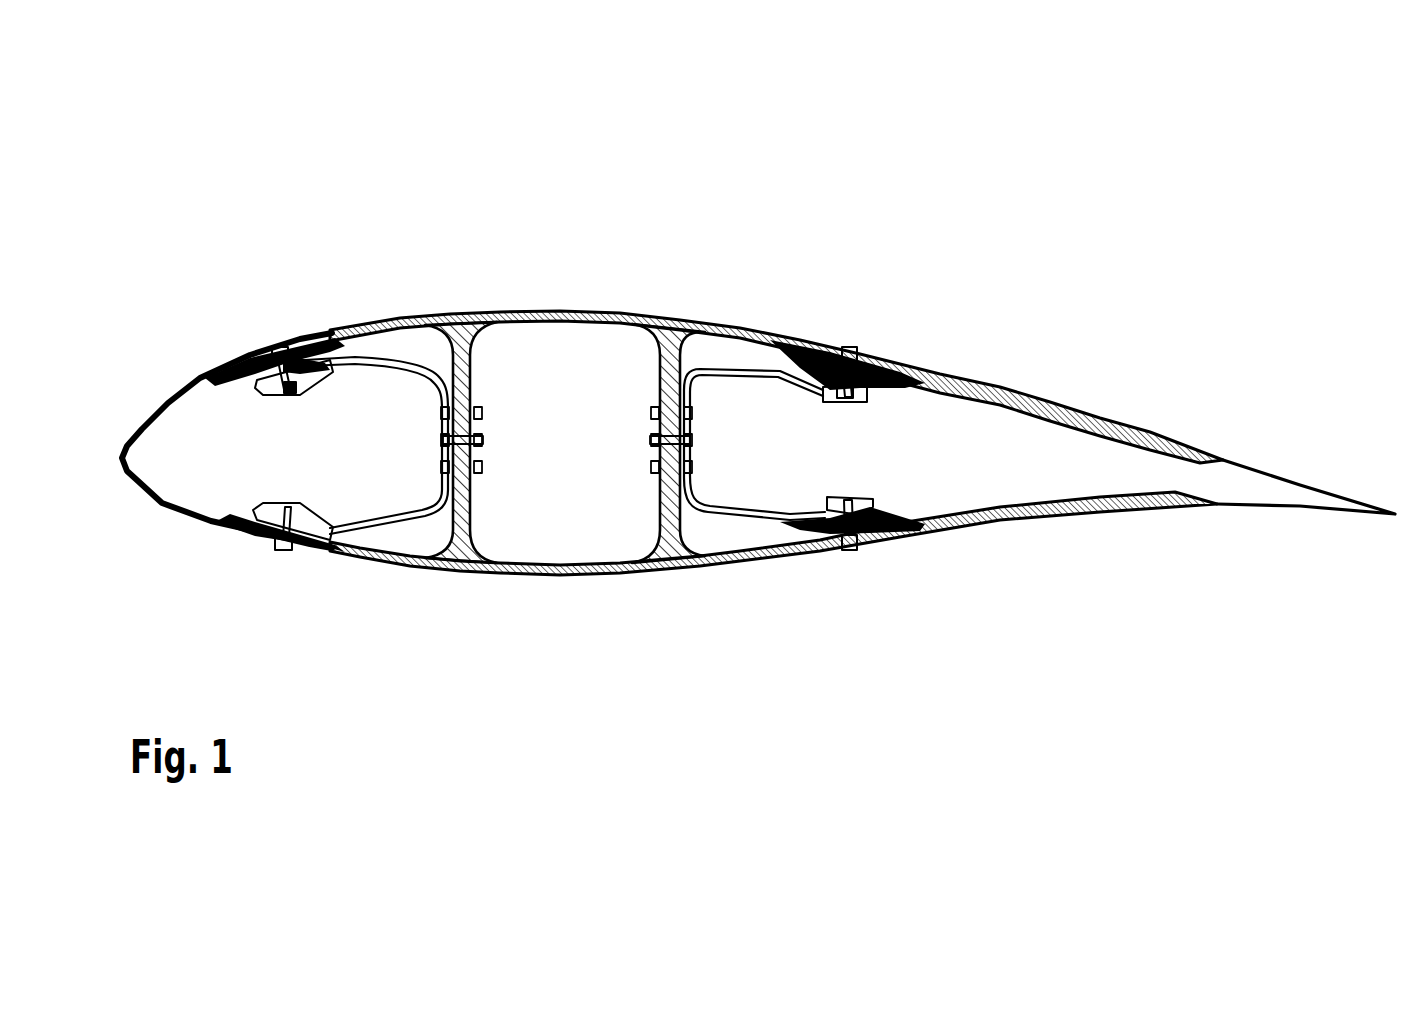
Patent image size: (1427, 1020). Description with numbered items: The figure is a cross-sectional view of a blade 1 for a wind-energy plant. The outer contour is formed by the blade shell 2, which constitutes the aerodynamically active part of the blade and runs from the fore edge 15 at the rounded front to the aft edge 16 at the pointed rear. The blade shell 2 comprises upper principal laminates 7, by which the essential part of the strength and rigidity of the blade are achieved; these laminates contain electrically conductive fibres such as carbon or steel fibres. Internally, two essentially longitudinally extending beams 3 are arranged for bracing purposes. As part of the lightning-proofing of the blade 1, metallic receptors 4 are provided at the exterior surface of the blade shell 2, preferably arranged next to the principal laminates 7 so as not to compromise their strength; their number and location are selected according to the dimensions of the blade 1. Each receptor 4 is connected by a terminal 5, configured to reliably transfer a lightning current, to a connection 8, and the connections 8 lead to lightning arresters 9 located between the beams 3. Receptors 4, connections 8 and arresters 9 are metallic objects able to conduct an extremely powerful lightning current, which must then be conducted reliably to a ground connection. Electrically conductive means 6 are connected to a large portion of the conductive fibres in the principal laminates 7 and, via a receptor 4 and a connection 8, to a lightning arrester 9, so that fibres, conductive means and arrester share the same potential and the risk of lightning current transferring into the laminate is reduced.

The blade 1 is at (305, 172).
The blade shell 2 is at (1158, 437).
The longitudinally extending beams 3 is at (455, 569).
The metallic receptors 4 is at (285, 347).
The terminals 5 is at (302, 345).
The electrically conductive means 6 is at (393, 321).
The principal laminates 7 is at (548, 312).
The connections 8 is at (400, 375).
The lightning arresters 9 is at (652, 440).
The fore edge 15 is at (119, 462).
The aft edge 16 is at (1395, 516).